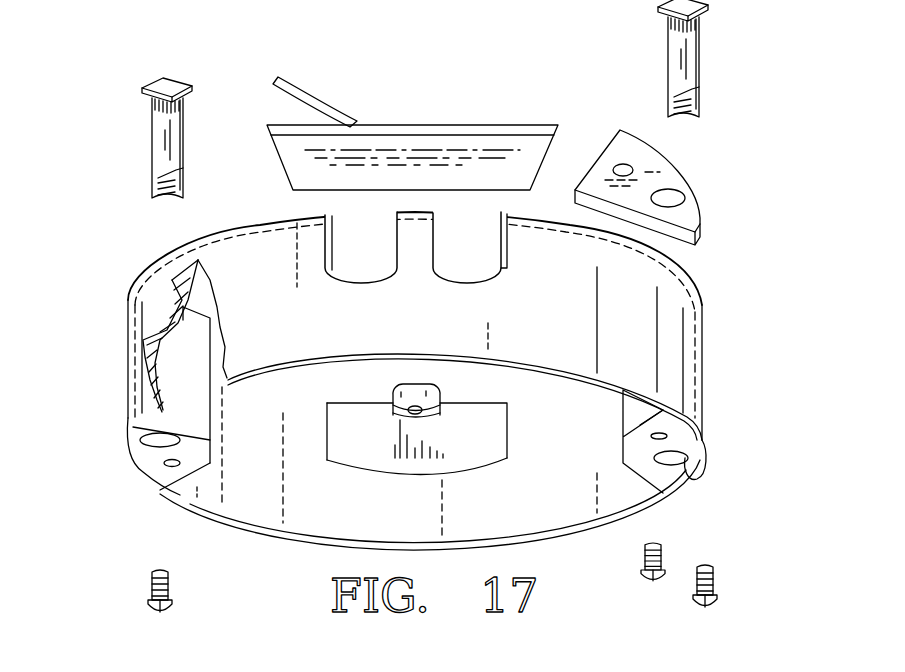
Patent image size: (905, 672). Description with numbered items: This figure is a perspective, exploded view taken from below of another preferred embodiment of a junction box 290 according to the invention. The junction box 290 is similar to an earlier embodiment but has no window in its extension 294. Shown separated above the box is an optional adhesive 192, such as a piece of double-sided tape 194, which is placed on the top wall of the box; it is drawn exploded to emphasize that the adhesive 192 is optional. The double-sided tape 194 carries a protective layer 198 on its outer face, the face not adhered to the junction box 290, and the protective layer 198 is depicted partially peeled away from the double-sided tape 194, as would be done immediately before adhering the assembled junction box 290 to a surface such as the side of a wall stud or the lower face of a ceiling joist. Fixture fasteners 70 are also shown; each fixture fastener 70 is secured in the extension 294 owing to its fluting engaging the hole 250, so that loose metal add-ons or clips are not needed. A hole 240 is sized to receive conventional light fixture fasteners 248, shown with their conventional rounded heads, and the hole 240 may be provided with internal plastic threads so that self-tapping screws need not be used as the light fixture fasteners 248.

The fixture fastener 70 is at (686, 70).
The adhesive 192 is at (395, 122).
The double-sided tape 194 is at (285, 173).
The protective layer 198 is at (300, 106).
The hole 240 is at (668, 437).
The light fixture fasteners 248 is at (716, 590).
The hole 250 is at (148, 444).
The junction box 290 is at (116, 396).
The extension 294 is at (212, 428).